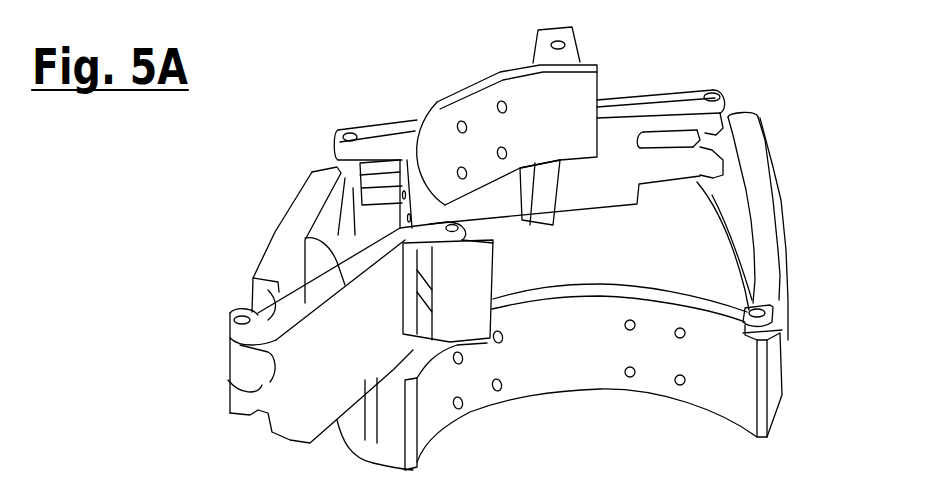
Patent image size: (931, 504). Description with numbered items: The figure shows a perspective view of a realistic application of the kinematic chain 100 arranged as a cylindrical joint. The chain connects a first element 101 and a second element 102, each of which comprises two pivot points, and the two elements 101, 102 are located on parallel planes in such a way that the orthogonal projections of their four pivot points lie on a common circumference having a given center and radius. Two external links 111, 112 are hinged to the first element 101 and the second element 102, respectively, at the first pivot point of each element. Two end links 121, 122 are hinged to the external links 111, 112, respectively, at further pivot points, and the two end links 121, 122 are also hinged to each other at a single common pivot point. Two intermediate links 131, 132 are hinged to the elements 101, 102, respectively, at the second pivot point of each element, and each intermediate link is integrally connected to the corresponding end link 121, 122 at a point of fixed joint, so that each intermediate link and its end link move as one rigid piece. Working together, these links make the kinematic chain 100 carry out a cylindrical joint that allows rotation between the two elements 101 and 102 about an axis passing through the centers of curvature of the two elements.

The kinematic chain 100 is at (146, 354).
The first element 101 is at (485, 86).
The second element 102 is at (540, 365).
The external link 111 is at (307, 403).
The external link 112 is at (762, 186).
The end link 121 is at (282, 248).
The end link 122 is at (620, 105).
The intermediate link 131 is at (548, 183).
The intermediate link 132 is at (330, 235).